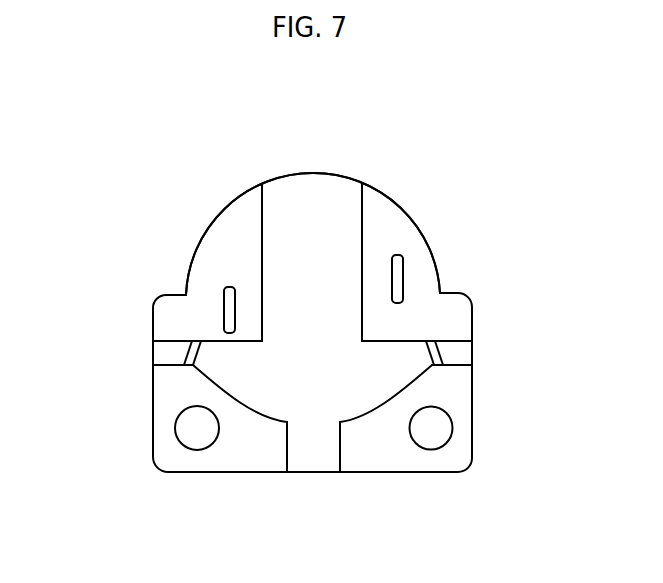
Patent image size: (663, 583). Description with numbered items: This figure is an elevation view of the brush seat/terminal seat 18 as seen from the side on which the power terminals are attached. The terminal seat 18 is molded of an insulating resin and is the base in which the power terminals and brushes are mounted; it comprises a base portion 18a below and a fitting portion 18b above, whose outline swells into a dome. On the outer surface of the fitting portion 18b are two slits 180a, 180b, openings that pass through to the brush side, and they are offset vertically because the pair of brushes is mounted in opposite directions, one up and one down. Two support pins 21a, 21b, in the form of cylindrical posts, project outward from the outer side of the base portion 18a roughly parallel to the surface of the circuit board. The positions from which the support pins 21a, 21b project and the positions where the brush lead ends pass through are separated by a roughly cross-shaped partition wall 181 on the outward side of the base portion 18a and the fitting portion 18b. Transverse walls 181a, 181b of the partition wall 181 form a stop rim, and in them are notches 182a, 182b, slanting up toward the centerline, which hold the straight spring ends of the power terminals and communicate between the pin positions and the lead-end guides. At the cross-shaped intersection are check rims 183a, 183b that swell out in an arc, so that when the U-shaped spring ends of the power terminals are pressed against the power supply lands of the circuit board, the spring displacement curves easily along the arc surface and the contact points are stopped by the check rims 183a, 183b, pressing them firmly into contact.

The terminal seat 18 is at (352, 172).
The base portion 18a is at (313, 478).
The fitting portion 18b is at (226, 203).
The partition wall 181 is at (262, 184).
The transverse wall 181a is at (170, 352).
The transverse wall 181b is at (474, 361).
The notch 182a is at (198, 342).
The notch 182b is at (427, 342).
The check rim 183a is at (260, 414).
The check rim 183b is at (372, 408).
The slit 180a is at (228, 287).
The slit 180b is at (396, 256).
The support pin 21a is at (176, 420).
The support pin 21b is at (448, 407).